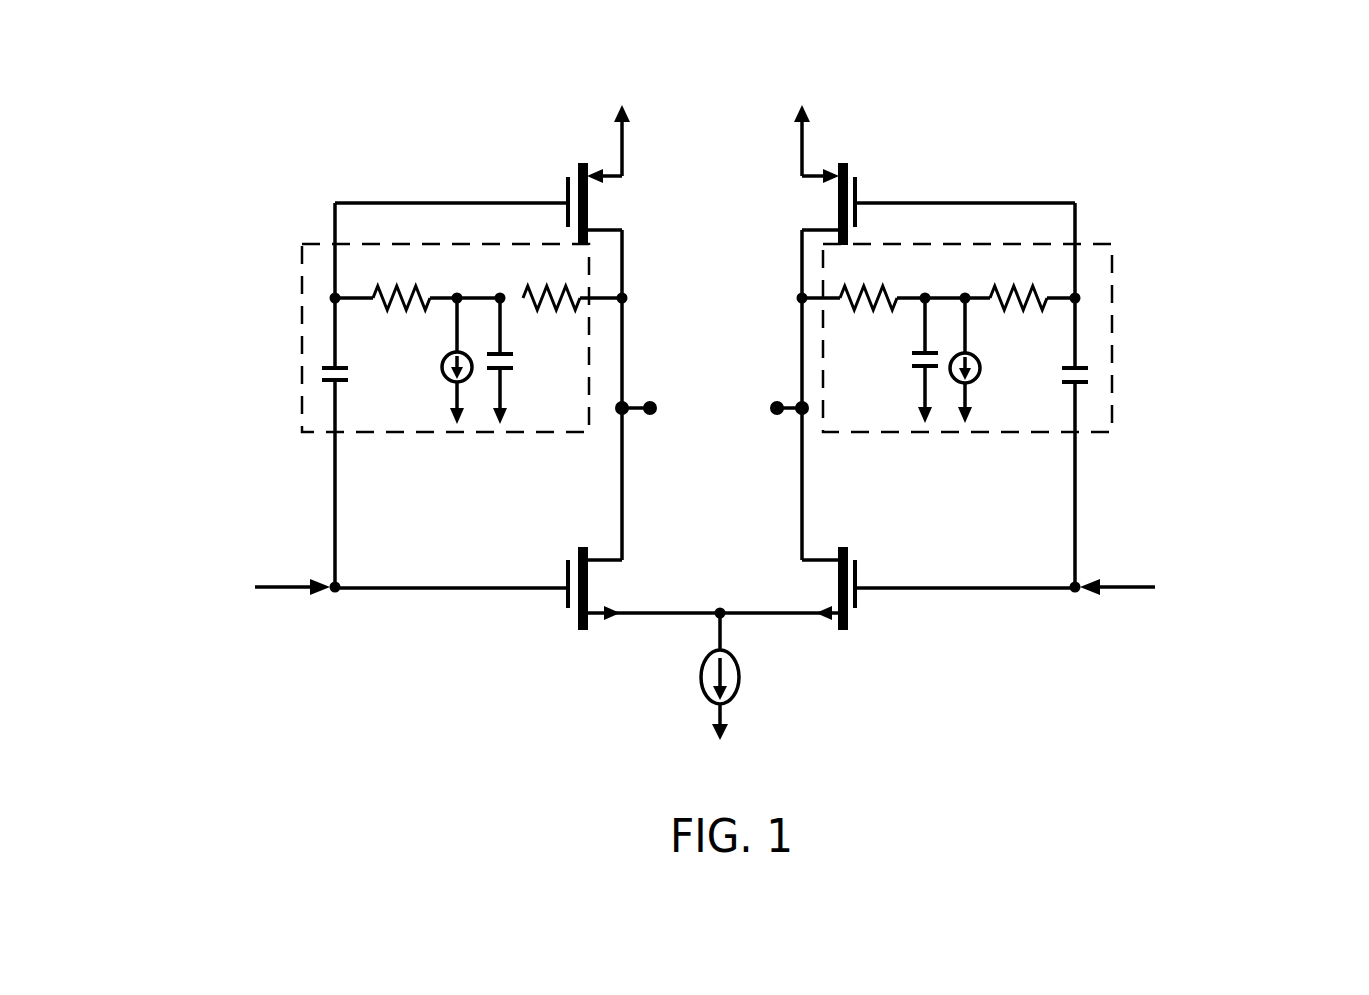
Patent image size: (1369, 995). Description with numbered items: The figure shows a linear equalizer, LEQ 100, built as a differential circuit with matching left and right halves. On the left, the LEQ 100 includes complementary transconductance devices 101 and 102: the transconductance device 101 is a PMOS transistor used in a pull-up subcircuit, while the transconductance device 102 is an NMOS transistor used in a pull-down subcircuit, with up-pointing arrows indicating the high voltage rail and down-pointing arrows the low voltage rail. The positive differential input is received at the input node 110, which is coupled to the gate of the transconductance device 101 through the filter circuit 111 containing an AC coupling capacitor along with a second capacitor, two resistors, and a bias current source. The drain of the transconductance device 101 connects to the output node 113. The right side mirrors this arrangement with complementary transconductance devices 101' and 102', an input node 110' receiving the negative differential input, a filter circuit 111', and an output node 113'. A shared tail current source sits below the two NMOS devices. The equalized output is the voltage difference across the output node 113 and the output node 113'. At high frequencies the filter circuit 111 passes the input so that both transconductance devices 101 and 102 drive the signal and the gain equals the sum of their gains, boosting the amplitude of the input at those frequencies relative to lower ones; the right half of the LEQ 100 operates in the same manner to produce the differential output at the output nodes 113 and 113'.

The LEQ 100 is at (736, 46).
The transconductance device 101 is at (629, 175).
The transconductance device 101' is at (786, 175).
The transconductance device 102 is at (644, 586).
The transconductance device 102' is at (786, 586).
The input node 110 is at (319, 598).
The input node 110' is at (1089, 600).
The filter circuit 111 is at (346, 395).
The filter circuit 111' is at (1068, 395).
The output node 113 is at (651, 391).
The output node 113' is at (759, 391).